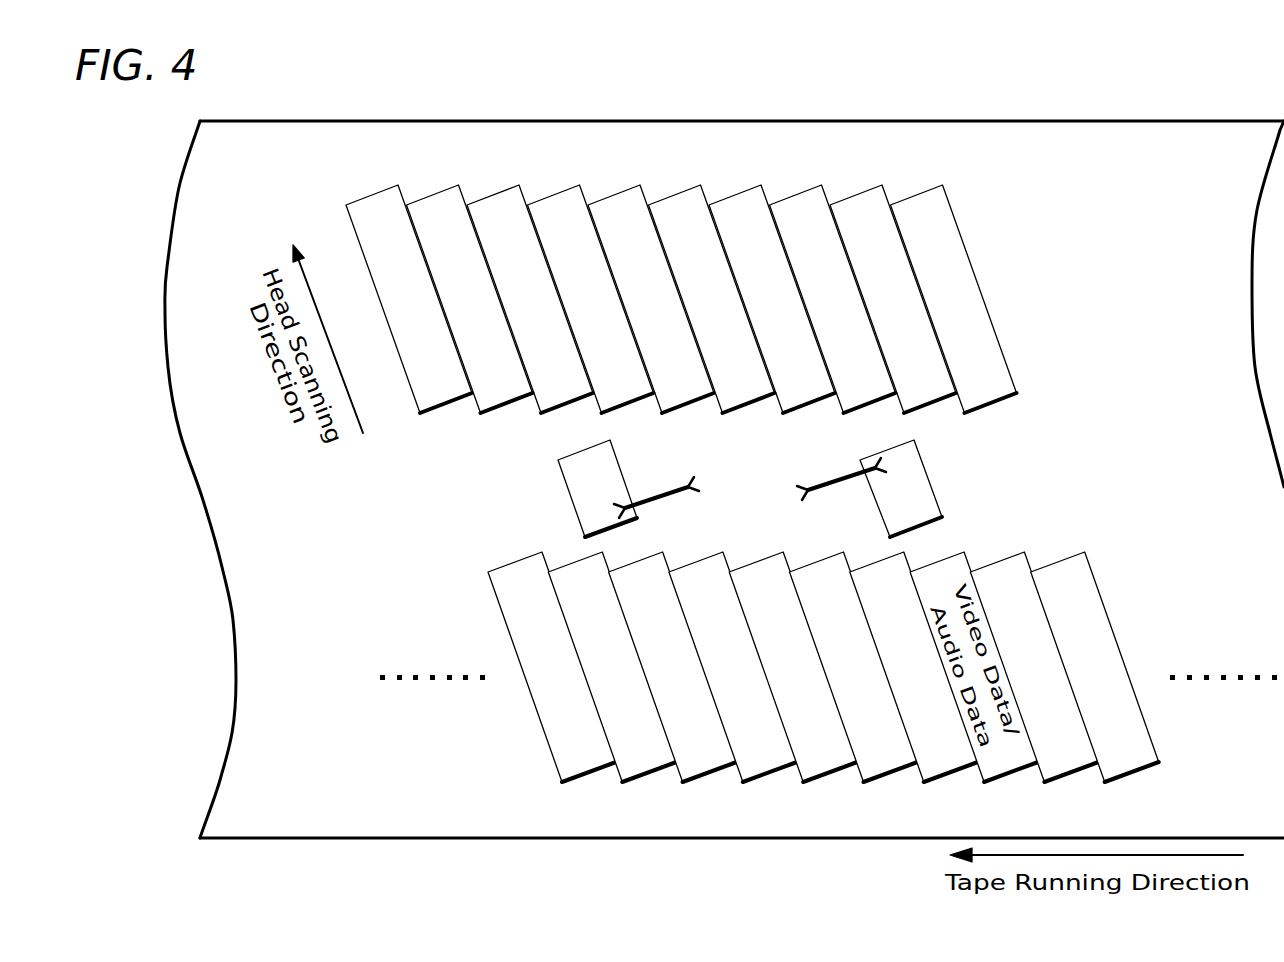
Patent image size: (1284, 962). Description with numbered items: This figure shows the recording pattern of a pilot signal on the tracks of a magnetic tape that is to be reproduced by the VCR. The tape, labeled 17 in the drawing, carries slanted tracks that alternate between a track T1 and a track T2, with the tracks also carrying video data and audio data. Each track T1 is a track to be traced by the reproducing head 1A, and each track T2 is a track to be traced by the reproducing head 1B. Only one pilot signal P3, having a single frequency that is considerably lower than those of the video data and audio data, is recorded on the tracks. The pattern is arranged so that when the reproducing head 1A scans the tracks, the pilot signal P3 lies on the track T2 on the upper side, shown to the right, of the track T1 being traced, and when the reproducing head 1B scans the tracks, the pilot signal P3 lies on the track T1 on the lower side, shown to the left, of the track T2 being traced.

The magnetic tape 17 is at (1081, 121).
The track T1 is at (371, 193).
The track T2 is at (432, 195).
The pilot signal P3 is at (617, 462).
The reproducing head 1A is at (832, 483).
The reproducing head 1B is at (663, 497).